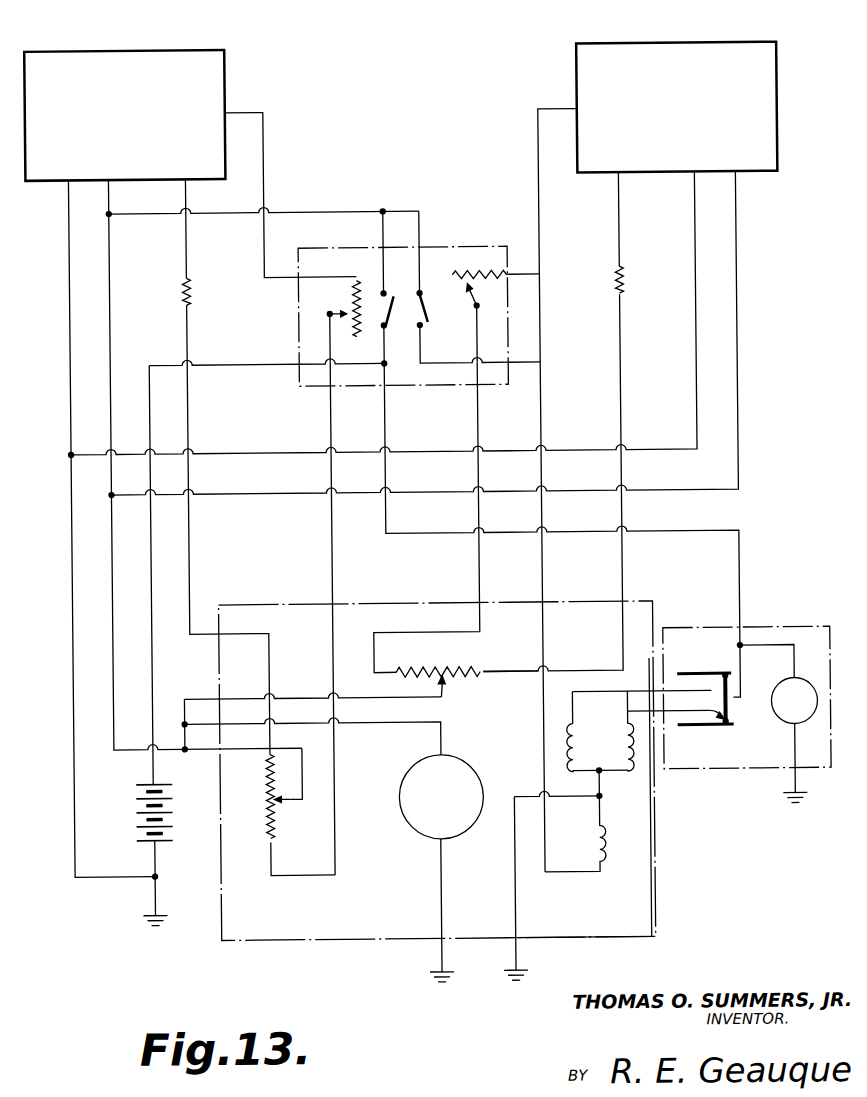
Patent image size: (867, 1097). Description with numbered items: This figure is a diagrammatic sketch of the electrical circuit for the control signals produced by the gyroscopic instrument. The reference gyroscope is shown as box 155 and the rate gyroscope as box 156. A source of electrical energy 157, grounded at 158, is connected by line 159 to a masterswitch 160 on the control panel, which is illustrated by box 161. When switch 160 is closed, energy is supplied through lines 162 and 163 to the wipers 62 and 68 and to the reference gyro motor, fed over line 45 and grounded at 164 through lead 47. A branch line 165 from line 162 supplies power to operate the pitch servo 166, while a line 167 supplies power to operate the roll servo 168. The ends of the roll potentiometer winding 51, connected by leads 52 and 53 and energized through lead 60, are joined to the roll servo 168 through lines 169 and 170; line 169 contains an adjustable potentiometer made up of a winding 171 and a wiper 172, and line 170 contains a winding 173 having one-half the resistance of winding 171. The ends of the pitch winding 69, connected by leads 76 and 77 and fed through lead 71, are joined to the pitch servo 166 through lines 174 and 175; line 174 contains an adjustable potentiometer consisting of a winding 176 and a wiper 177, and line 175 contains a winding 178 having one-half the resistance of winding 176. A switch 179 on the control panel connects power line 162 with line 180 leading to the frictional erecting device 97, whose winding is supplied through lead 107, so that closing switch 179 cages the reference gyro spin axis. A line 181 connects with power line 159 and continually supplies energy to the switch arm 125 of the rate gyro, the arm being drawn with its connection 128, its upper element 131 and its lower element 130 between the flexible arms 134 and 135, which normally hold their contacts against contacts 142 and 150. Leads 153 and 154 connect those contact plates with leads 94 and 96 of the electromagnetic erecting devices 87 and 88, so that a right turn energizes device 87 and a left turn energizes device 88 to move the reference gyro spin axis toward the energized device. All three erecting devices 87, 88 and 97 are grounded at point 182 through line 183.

The pitch servo 166 is at (205, 48).
The roll servo 168 is at (781, 110).
The branch line 165 is at (112, 200).
The line 162 is at (340, 211).
The line 163 is at (112, 300).
The winding 178 is at (193, 289).
The line 175 is at (189, 558).
The line 159 is at (235, 364).
The winding 176 is at (354, 291).
The wiper 177 is at (338, 320).
The line 174 is at (332, 563).
The masterswitch 160 is at (395, 300).
The switch 179 is at (431, 318).
The control panel 161 is at (455, 247).
The winding 171 is at (458, 299).
The wiper 172 is at (490, 292).
The line 169 is at (479, 567).
The line 180 is at (542, 413).
The line 181 is at (386, 422).
The line 167 is at (247, 492).
The line 170 is at (622, 563).
The winding 173 is at (626, 284).
The lead 53 is at (375, 678).
The potentiometer winding 51 is at (465, 678).
The lead 52 is at (509, 674).
The lead 60 is at (385, 698).
The wiper 62 is at (436, 692).
The line 45 is at (439, 742).
The lead 47 is at (438, 888).
The ground 164 is at (428, 982).
The lead 76 is at (270, 740).
The lead 71 is at (300, 778).
The potentiometer winding 69 is at (263, 795).
The wiper 68 is at (285, 802).
The lead 77 is at (270, 862).
The source of electrical energy 157 is at (172, 815).
The ground 158 is at (162, 925).
The reference gyroscope 155 is at (597, 940).
The line 183 is at (512, 890).
The ground point 182 is at (510, 983).
The lead 94 is at (625, 693).
The lead 96 is at (592, 694).
The electromagnetic erecting device 88 is at (605, 742).
The lead 153 is at (676, 712).
The electromagnetic erecting device 87 is at (634, 764).
The lead 107 is at (578, 873).
The frictional erecting device 97 is at (606, 848).
The rate gyroscope 156 is at (708, 771).
The conductor 128 is at (740, 690).
The switch arm 125 is at (728, 707).
The flexible arm 135 is at (722, 672).
The armature pivot 131 is at (728, 670).
The lead 154 is at (670, 690).
The contact 150 is at (708, 684).
The contact 142 is at (701, 735).
The contact 130 is at (730, 723).
The flexible arm 134 is at (718, 729).